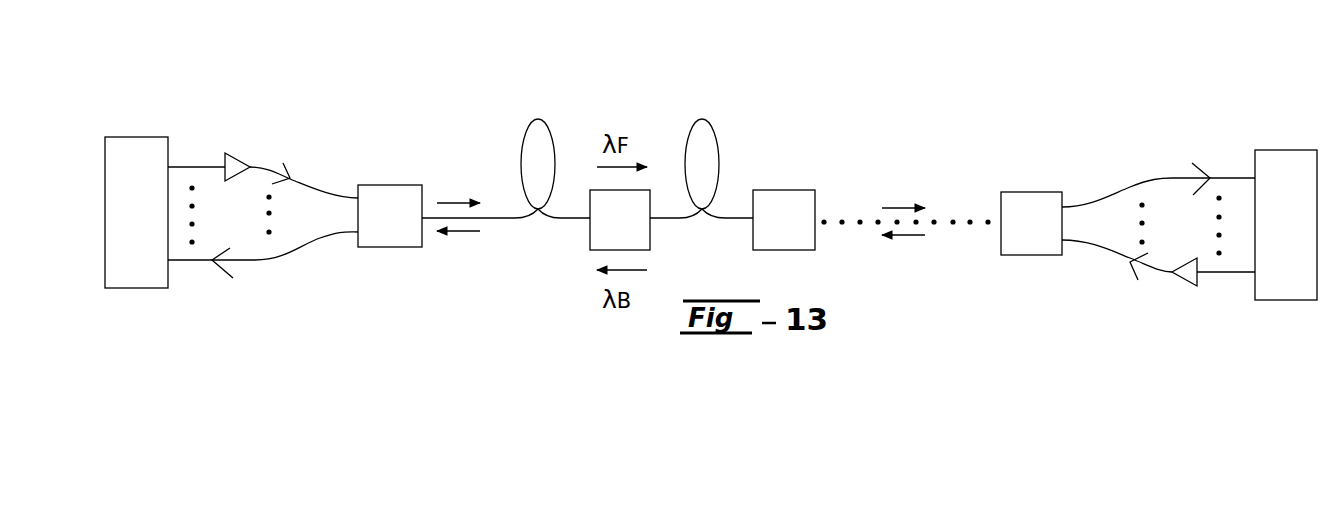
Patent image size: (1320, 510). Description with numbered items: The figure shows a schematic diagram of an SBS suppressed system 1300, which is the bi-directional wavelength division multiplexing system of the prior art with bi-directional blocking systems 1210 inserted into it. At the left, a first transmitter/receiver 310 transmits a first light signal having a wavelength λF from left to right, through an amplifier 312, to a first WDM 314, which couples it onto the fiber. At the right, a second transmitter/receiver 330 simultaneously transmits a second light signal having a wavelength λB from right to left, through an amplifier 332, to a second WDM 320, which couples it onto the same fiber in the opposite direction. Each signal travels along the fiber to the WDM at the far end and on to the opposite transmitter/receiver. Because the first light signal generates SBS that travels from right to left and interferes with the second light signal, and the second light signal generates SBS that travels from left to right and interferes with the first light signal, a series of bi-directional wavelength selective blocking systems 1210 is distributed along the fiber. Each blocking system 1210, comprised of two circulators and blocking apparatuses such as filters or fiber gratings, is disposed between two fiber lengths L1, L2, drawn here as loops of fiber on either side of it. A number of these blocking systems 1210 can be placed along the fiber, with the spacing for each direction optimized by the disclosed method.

The first transmitter/receiver 310 is at (137, 137).
The amplifier 312 is at (240, 153).
The first WDM 314 is at (392, 185).
The first fiber length L1 is at (538, 119).
The second fiber length L2 is at (702, 119).
The bi-directional blocking system 1210 is at (590, 233).
The SBS suppressed system 1300 is at (612, 97).
The second WDM 320 is at (1033, 192).
The amplifier 332 is at (1180, 284).
The second transmitter/receiver 330 is at (1290, 150).